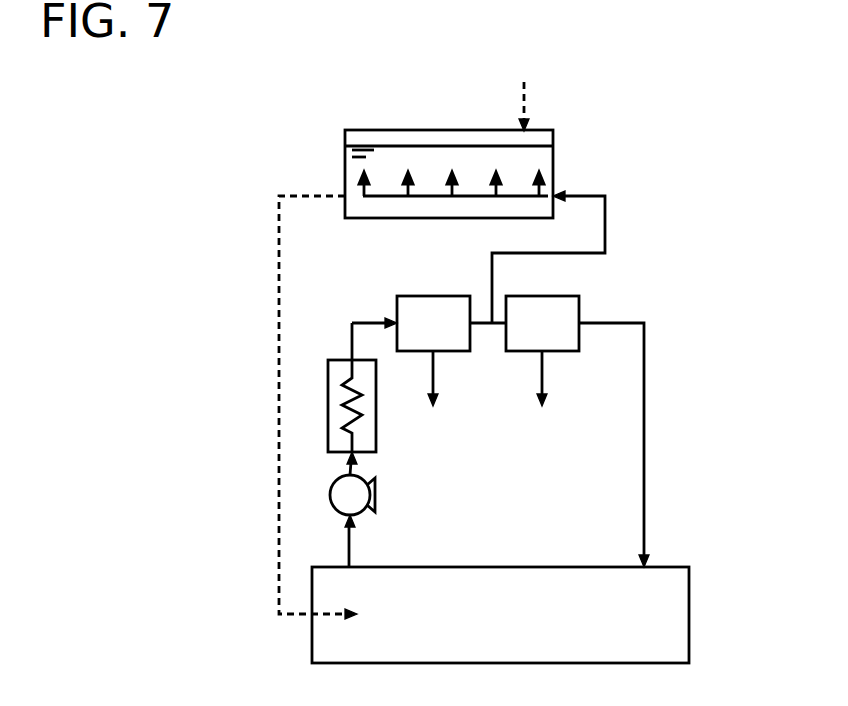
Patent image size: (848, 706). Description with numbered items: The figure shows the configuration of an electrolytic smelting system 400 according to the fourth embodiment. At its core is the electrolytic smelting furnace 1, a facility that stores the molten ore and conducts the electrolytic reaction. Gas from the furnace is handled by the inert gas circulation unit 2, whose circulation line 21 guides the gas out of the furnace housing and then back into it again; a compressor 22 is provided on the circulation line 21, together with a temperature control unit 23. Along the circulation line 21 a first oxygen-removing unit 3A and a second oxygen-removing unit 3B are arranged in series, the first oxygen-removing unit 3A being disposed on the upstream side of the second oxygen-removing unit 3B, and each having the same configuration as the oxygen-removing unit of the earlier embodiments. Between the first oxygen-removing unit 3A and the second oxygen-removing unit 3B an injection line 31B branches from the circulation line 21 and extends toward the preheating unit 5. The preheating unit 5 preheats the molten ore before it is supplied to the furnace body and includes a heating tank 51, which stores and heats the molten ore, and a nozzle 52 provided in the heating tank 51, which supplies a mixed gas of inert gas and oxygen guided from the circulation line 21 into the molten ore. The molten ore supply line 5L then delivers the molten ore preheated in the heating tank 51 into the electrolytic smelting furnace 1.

The electrolytic smelting system 400 is at (153, 145).
The electrolytic smelting furnace 1 is at (700, 604).
The inert gas circulation unit 2 is at (655, 386).
The circulation line 21 is at (645, 460).
The compressor 22 is at (330, 496).
The temperature control unit 23 is at (328, 408).
The first oxygen-removing unit 3A is at (397, 304).
The second oxygen-removing unit 3B is at (579, 300).
The injection line 31B is at (605, 225).
The preheating unit 5 is at (562, 152).
The heating tank 51 is at (345, 167).
The nozzle 52 is at (427, 196).
The molten ore supply line 5L is at (279, 228).